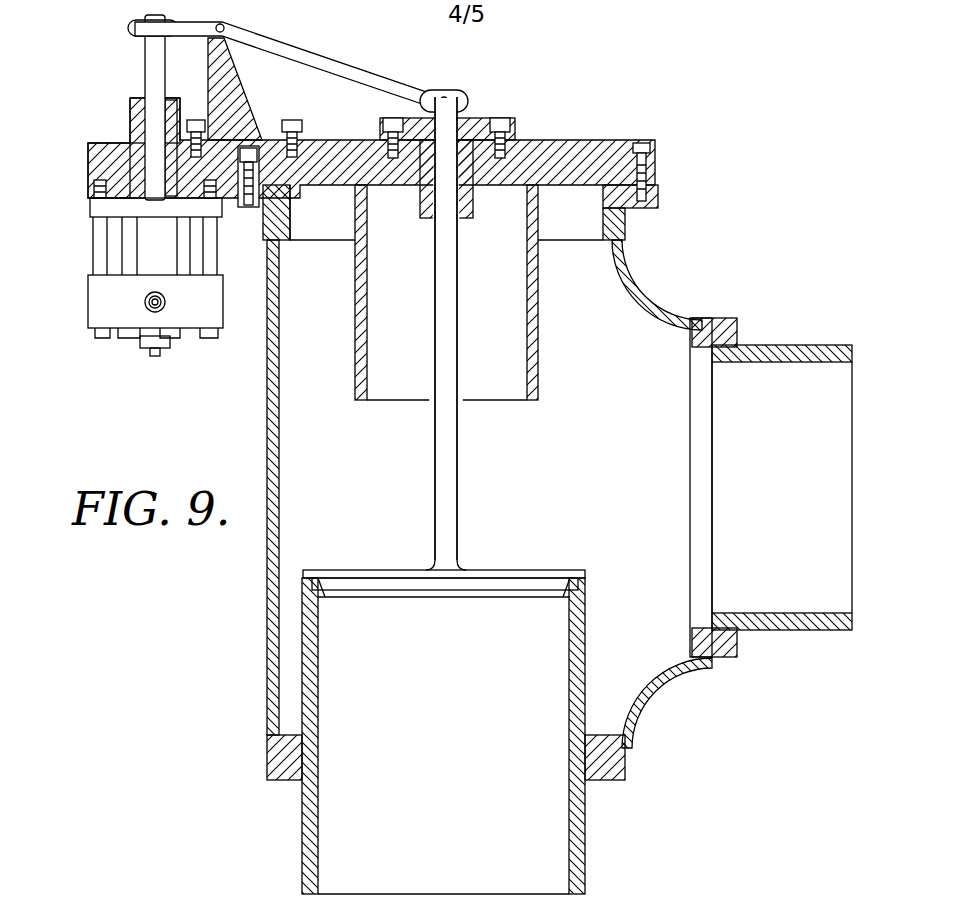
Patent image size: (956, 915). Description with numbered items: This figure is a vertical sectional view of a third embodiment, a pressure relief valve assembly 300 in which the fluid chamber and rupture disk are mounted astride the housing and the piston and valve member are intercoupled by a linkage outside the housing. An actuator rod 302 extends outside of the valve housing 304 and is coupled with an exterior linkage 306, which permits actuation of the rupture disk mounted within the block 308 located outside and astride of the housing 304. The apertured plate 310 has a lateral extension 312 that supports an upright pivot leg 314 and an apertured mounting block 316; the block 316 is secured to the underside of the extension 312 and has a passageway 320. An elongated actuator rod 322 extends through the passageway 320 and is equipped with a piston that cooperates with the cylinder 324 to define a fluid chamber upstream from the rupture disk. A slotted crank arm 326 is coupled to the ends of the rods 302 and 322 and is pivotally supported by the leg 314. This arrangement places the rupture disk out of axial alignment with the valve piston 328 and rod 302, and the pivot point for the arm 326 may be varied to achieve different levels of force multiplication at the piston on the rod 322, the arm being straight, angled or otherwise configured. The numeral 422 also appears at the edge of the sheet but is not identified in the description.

The pressure relief valve assembly 300 is at (614, 140).
The actuator rod 302 is at (440, 470).
The valve housing 304 is at (273, 413).
The exterior linkage 306 is at (372, 62).
The block 308 is at (95, 302).
The apertured plate 310 is at (549, 145).
The lateral extension 312 is at (93, 165).
The upright pivot leg 314 is at (240, 78).
The apertured mounting block 316 is at (137, 122).
The passageway 320 is at (166, 123).
The elongated actuator rod 322 is at (152, 52).
The cylinder 324 is at (160, 238).
The slotted crank arm 326 is at (298, 48).
The valve piston 328 is at (517, 577).
The reference numeral 422 is at (689, 909).